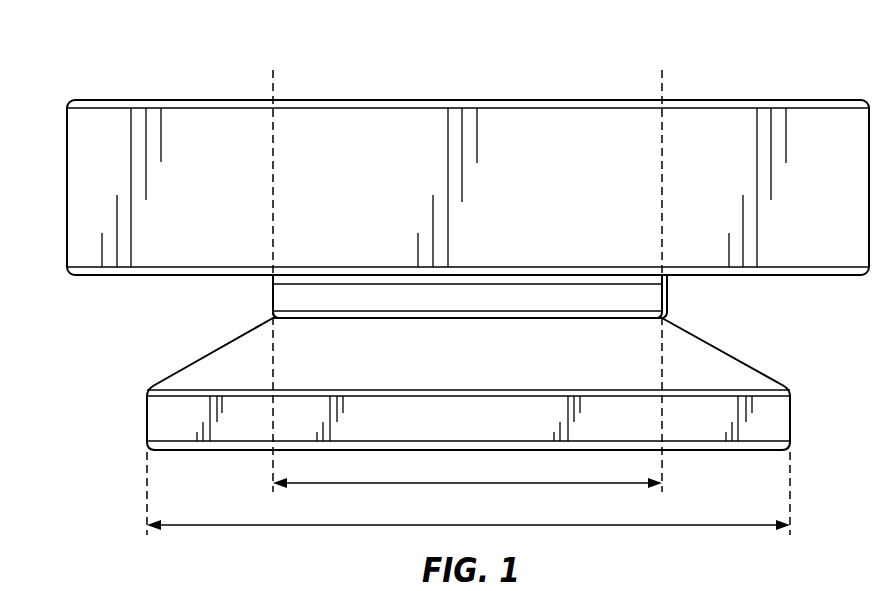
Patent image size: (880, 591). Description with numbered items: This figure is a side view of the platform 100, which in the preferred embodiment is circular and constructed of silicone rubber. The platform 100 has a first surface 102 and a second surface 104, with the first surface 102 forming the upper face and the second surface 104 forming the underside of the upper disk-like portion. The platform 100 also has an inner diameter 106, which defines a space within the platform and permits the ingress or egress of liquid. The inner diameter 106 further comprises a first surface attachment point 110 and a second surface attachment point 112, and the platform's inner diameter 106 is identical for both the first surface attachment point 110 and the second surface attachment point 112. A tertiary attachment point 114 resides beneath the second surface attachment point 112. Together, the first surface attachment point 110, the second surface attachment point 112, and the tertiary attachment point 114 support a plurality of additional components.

The platform 100 is at (102, 43).
The first surface 102 is at (172, 100).
The second surface 104 is at (153, 277).
The inner diameter 106 is at (456, 483).
The first surface attachment point 110 is at (288, 100).
The second surface attachment point 112 is at (281, 300).
The tertiary attachment point 114 is at (286, 525).